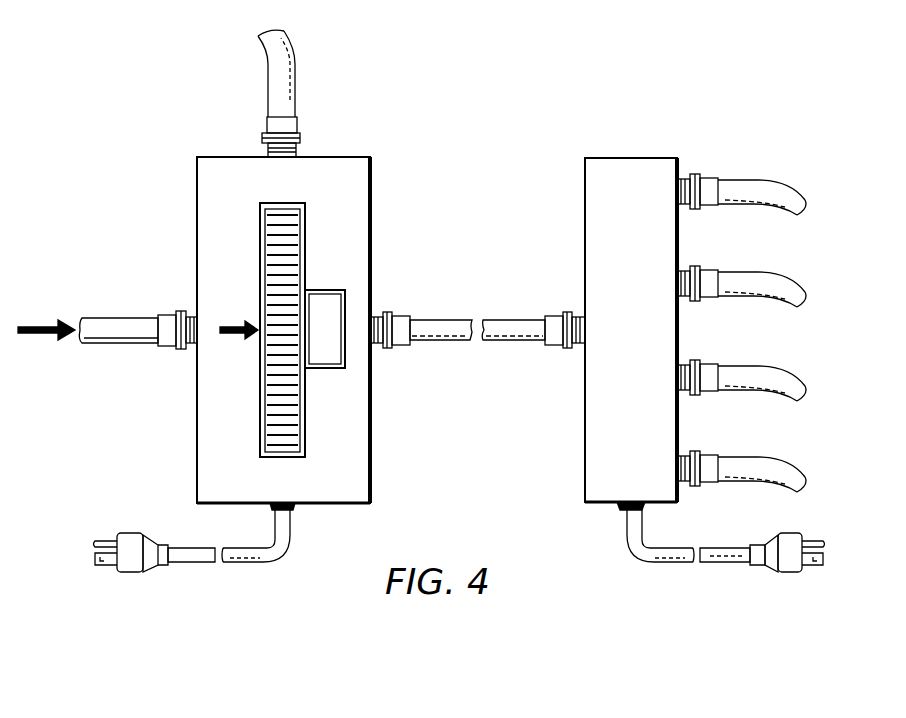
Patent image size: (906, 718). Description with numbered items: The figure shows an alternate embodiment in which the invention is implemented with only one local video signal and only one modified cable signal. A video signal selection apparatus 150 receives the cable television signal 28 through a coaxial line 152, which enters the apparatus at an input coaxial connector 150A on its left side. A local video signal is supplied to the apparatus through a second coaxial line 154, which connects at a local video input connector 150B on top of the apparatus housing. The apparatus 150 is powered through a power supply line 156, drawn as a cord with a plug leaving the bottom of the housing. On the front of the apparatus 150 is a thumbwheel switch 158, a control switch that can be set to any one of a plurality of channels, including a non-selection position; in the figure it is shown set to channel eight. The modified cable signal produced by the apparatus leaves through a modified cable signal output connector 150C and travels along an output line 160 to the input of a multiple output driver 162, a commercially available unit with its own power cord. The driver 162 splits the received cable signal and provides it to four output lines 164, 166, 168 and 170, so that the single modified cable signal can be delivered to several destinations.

The cable television signal 28 is at (36, 325).
The video signal selection apparatus 150 is at (371, 191).
The input coaxial connector 150A is at (183, 312).
The local video input connector 150B is at (298, 147).
The modified cable signal output connector 150C is at (376, 316).
The coaxial line 152 is at (120, 344).
The coaxial line 154 is at (270, 82).
The power supply line 156 is at (195, 565).
The thumbwheel switch 158 is at (262, 295).
The output line 160 is at (448, 340).
The multiple output driver 162 is at (652, 373).
The output line 164 is at (787, 189).
The output line 166 is at (787, 279).
The output line 168 is at (787, 371).
The output line 170 is at (787, 461).